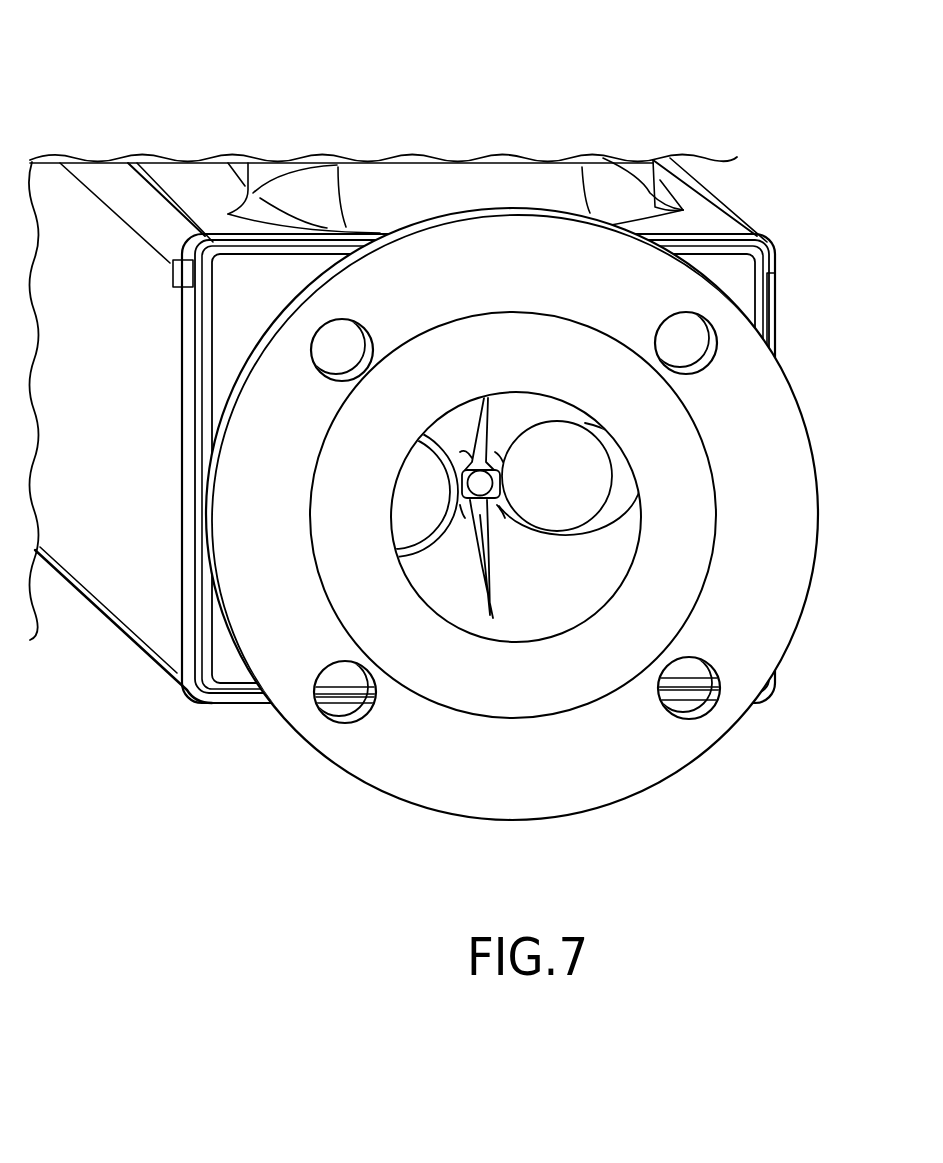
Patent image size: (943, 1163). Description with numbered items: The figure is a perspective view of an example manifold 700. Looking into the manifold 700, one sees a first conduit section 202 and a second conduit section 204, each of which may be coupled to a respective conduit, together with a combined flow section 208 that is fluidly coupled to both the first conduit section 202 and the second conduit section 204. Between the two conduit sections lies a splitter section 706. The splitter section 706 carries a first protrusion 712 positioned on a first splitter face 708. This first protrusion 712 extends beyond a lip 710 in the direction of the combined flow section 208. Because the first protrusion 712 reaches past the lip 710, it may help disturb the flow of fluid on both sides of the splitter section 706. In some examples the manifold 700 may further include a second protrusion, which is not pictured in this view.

The manifold 700 is at (155, 81).
The first conduit section 202 is at (428, 488).
The second conduit section 204 is at (575, 453).
The combined flow section 208 is at (457, 590).
The splitter section 706 is at (487, 440).
The first splitter face 708 is at (460, 493).
The lip 710 is at (473, 520).
The first protrusion 712 is at (503, 497).